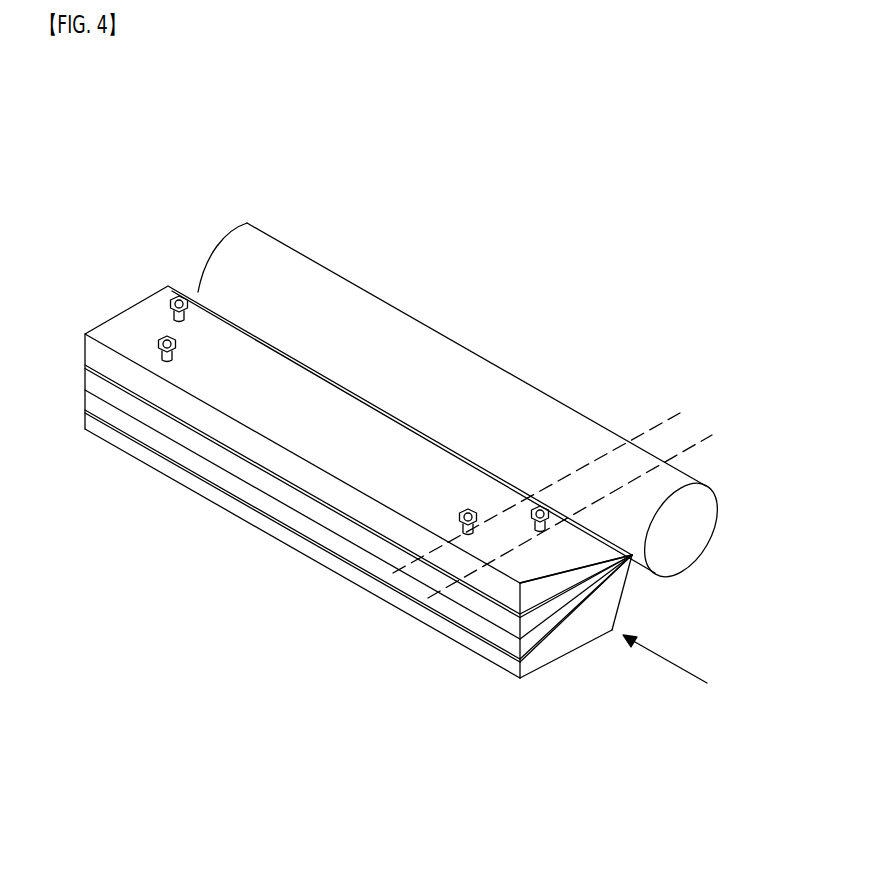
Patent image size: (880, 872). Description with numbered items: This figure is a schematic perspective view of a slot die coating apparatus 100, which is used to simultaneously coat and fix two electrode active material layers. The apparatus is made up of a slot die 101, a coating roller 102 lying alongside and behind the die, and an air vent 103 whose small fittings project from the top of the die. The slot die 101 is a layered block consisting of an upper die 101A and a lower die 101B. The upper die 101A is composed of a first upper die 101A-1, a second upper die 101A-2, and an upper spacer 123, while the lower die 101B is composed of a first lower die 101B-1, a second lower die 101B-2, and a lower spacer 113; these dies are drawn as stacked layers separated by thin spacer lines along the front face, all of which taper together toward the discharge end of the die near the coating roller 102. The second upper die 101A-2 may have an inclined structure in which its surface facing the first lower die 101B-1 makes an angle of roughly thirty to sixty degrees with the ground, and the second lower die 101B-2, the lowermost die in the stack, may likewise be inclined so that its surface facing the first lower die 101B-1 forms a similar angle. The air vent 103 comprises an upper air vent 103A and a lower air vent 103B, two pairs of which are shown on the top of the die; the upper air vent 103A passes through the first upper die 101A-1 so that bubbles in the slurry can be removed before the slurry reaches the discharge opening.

The slot die coating apparatus 100 is at (400, 94).
The slot die 101 is at (233, 683).
The upper die 101A is at (300, 657).
The first upper die 101A-1 is at (490, 588).
The second upper die 101A-2 is at (493, 615).
The lower die 101B is at (300, 743).
The first lower die 101B-1 is at (507, 638).
The second lower die 101B-2 is at (513, 674).
The coating roller 102 is at (387, 322).
The air vent 103 is at (195, 231).
The upper air vent 103A is at (165, 337).
The lower air vent 103B is at (175, 296).
The lower spacer 113 is at (540, 652).
The upper spacer 123 is at (560, 596).